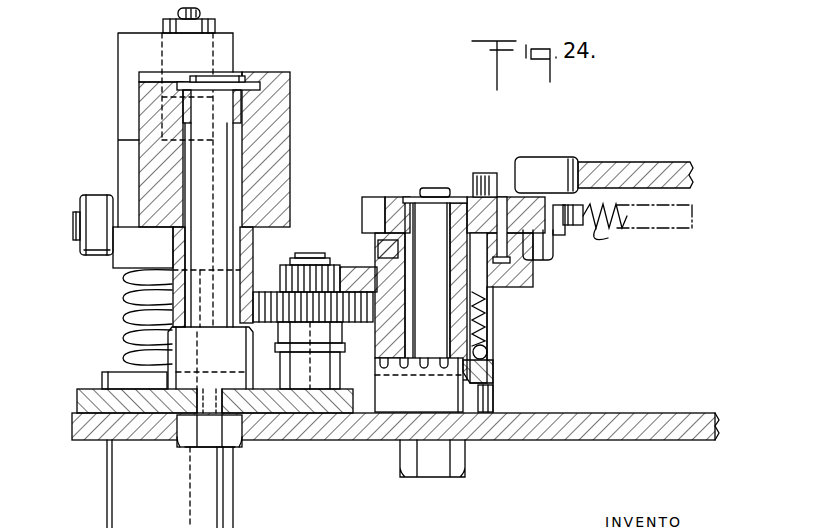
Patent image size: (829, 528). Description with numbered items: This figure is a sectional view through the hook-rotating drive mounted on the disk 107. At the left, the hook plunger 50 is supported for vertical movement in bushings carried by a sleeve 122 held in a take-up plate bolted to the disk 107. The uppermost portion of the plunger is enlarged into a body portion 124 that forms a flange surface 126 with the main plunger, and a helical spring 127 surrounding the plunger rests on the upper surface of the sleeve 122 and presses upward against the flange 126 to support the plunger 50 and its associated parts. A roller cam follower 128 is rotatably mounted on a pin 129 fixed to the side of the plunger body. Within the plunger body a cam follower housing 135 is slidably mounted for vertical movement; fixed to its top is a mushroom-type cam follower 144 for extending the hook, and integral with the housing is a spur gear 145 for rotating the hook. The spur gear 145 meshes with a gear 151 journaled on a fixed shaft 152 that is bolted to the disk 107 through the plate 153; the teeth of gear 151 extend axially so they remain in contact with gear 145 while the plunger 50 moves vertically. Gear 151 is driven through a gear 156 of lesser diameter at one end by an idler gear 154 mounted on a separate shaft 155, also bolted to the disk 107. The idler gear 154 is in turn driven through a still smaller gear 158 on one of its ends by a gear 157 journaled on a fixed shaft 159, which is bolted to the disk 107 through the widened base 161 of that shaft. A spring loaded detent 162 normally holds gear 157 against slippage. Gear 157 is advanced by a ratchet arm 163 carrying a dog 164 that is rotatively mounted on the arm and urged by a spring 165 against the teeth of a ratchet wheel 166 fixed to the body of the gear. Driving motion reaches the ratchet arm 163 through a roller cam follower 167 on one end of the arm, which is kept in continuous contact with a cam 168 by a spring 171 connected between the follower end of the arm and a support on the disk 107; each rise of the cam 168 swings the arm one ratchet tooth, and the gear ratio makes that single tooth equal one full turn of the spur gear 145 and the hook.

The hook plunger 50 is at (143, 350).
The disk 107 is at (90, 435).
The sleeve 122 is at (102, 381).
The body portion 124 is at (122, 160).
The flange surface 126 is at (115, 270).
The helical spring 127 is at (168, 330).
The roller cam follower 128 is at (82, 253).
The pin 129 is at (72, 229).
The cam follower housing 135 is at (216, 28).
The mushroom-type cam follower 144 is at (178, 13).
The spur gear 145 is at (241, 78).
The gear 151 is at (283, 109).
The fixed shaft 152 is at (207, 162).
The plate 153 is at (122, 401).
The idler gear 154 is at (262, 295).
The shaft 155 is at (307, 258).
The gear 156 is at (157, 310).
The gear 157 is at (512, 292).
The gear 158 is at (321, 272).
The fixed shaft 159 is at (428, 226).
The widened base 161 is at (490, 401).
The spring loaded detent 162 is at (488, 352).
The ratchet arm 163 is at (370, 198).
The dog 164 is at (512, 258).
The spring 165 is at (484, 174).
The ratchet wheel 166 is at (384, 249).
The roller cam follower 167 is at (540, 158).
The cam 168 is at (640, 164).
The spring 171 is at (615, 233).